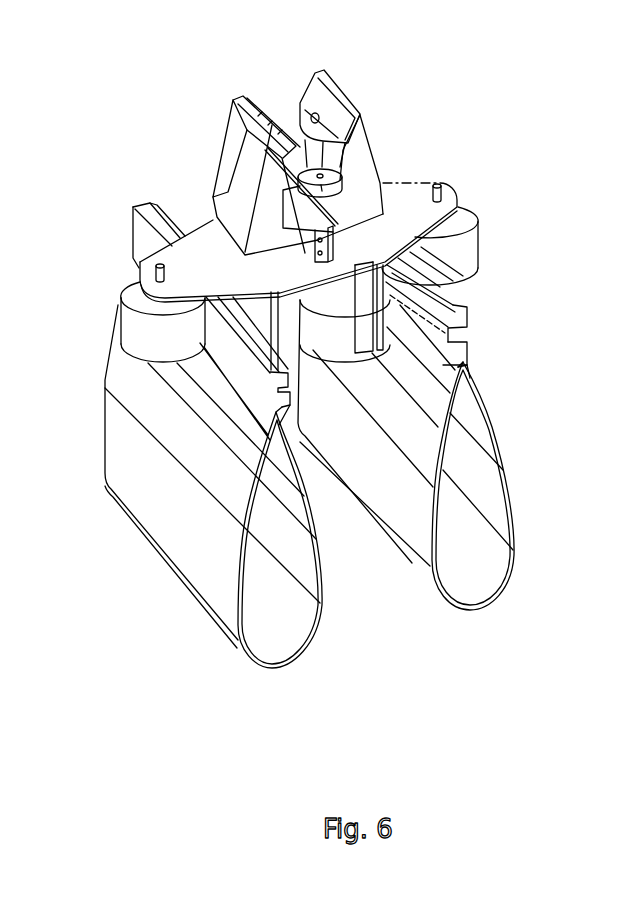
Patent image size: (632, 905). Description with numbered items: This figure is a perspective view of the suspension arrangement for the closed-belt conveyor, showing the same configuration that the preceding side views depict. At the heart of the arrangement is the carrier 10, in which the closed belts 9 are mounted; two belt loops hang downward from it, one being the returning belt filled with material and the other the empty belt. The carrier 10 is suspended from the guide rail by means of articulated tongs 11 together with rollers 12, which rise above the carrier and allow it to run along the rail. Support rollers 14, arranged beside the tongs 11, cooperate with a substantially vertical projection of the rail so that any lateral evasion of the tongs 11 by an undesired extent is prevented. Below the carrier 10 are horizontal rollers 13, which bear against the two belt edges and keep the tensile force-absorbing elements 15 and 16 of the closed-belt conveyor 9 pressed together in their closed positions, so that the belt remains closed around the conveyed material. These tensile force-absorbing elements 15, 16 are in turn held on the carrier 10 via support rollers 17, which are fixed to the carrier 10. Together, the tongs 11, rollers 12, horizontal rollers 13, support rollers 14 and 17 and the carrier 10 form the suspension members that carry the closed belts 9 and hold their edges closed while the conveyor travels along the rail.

The closed belt 9 is at (215, 560).
The carrier 10 is at (405, 197).
The articulated tongs 11 is at (238, 188).
The rollers 12 is at (303, 132).
The horizontal rollers 13 is at (330, 296).
The support rollers 14 is at (330, 180).
The tensile force-absorbing element 15 is at (452, 352).
The tensile force-absorbing element 16 is at (455, 329).
The support rollers 17 is at (383, 317).